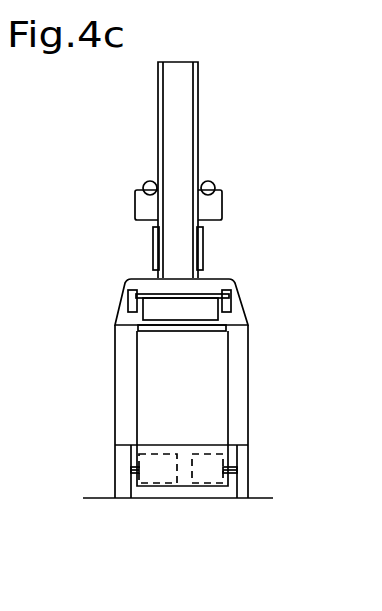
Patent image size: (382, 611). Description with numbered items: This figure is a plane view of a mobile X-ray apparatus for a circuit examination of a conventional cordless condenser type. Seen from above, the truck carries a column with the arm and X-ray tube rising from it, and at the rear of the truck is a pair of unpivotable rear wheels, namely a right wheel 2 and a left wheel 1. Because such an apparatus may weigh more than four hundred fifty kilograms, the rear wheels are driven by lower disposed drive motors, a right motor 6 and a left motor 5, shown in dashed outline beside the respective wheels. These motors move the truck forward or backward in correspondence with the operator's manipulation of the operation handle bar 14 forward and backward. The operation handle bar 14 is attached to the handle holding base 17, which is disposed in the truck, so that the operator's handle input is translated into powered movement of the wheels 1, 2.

The left wheel 1 is at (122, 488).
The right wheel 2 is at (242, 487).
The left motor 5 is at (157, 477).
The right motor 6 is at (206, 476).
The operation handle bar 14 is at (210, 292).
The handle holding base 17 is at (130, 308).